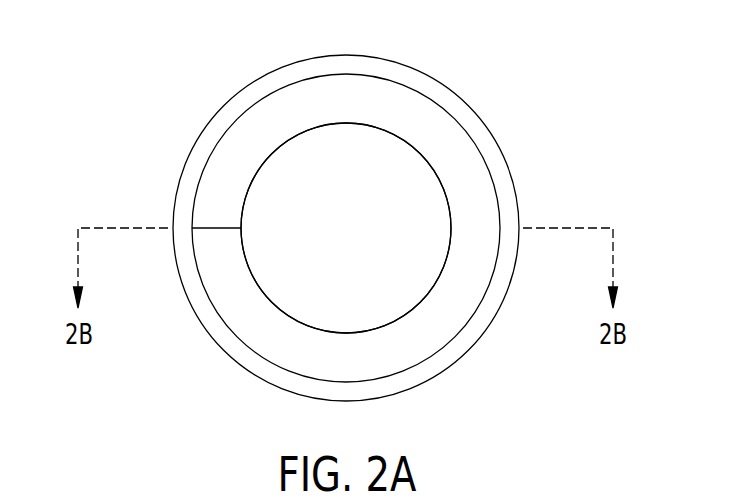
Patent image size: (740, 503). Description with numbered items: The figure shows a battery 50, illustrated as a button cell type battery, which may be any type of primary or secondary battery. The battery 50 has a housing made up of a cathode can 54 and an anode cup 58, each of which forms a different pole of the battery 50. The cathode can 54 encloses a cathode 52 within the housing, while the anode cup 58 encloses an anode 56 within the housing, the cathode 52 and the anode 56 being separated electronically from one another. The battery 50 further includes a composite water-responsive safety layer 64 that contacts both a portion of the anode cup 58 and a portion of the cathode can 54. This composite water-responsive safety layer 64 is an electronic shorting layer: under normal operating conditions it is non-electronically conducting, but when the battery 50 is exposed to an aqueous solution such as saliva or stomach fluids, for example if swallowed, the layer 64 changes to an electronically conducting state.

The battery 50 is at (407, 251).
The cathode 52 is at (225, 350).
The cathode can 54 is at (472, 332).
The anode 56 is at (334, 241).
The anode cup 58 is at (300, 163).
The composite water-responsive safety layer 64 is at (483, 185).